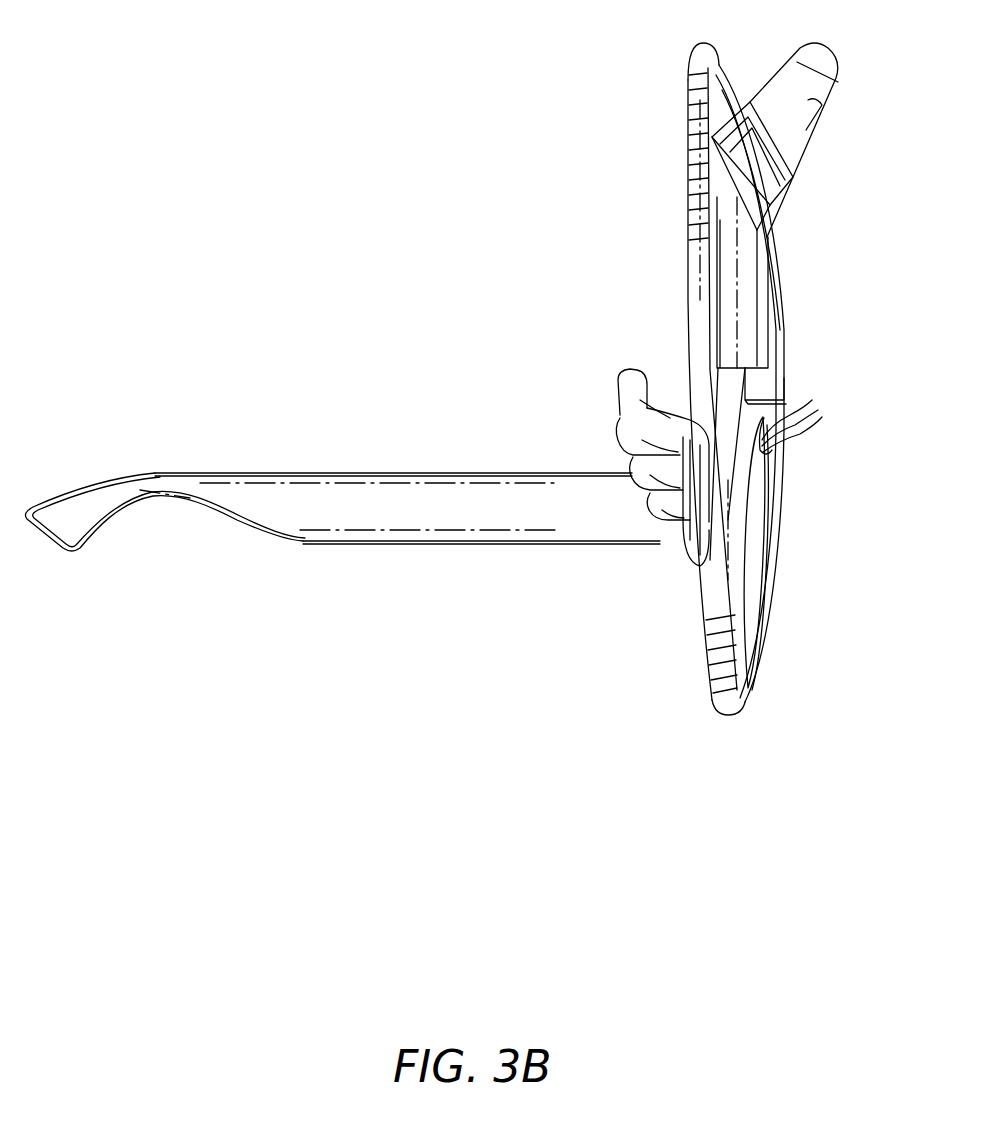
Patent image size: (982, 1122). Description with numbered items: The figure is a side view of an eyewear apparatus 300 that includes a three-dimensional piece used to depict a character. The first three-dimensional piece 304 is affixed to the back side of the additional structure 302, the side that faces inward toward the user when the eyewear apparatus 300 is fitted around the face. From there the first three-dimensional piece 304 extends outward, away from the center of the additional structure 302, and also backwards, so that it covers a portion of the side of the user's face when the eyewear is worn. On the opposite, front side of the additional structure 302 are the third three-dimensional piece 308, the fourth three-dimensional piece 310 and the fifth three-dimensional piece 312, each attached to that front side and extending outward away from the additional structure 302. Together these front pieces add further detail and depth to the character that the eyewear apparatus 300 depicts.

The eyewear apparatus 300 is at (360, 132).
The additional structure 302 is at (730, 478).
The first three-dimensional piece 304 is at (665, 515).
The third three-dimensional piece 308 is at (740, 342).
The fourth three-dimensional piece 310 is at (793, 130).
The fifth three-dimensional piece 312 is at (800, 447).